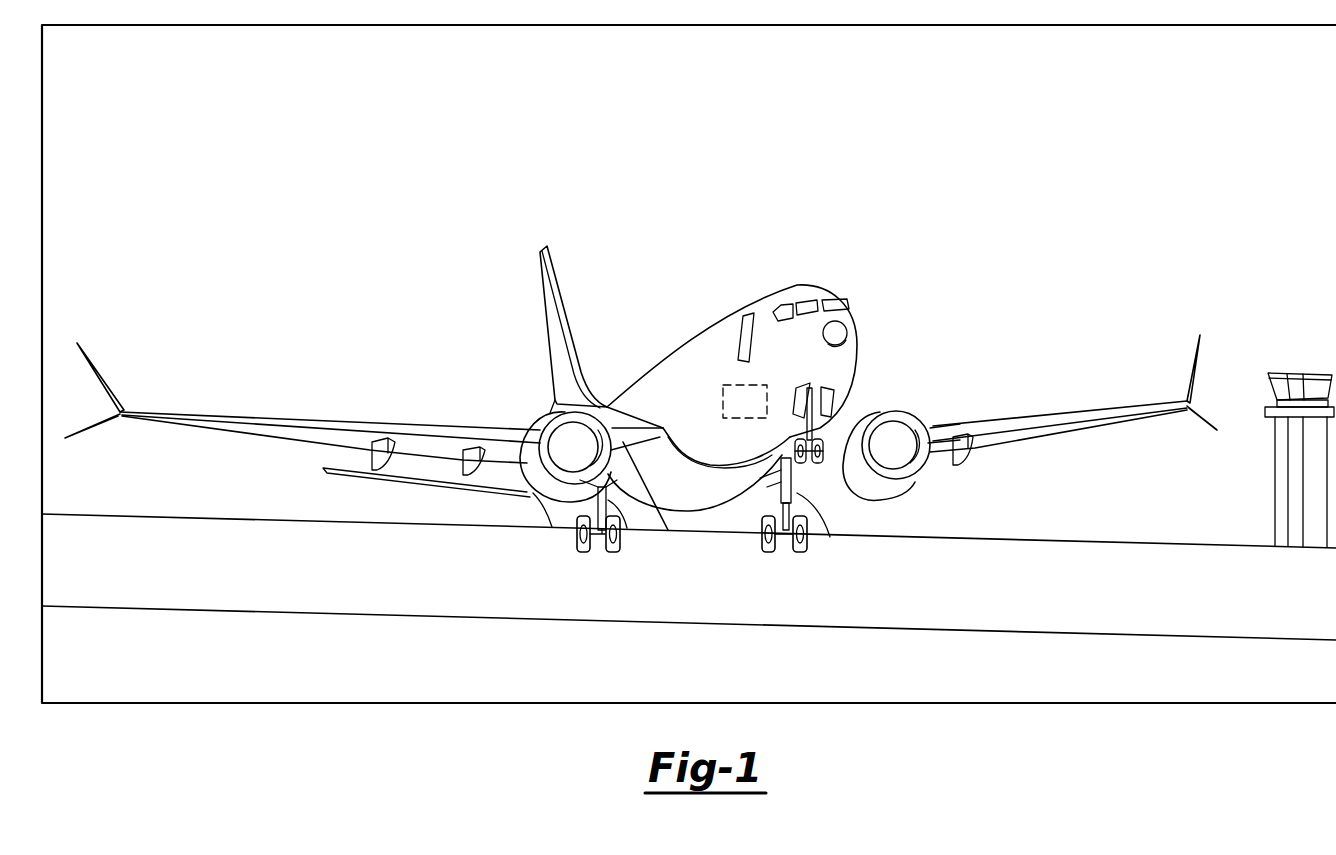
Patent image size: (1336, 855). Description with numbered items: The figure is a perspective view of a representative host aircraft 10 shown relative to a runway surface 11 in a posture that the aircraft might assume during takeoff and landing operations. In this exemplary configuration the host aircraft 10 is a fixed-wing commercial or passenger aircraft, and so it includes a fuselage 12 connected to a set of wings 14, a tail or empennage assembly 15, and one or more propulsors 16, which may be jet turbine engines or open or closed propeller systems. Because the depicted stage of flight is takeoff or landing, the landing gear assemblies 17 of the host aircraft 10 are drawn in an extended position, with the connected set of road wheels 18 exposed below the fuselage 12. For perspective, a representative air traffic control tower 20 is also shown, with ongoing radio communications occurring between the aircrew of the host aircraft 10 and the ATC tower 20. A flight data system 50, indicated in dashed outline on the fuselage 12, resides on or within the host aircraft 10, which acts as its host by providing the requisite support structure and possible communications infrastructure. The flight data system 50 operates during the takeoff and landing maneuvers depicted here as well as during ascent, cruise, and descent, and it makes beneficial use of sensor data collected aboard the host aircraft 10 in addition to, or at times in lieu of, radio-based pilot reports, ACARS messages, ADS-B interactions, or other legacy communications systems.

The host aircraft 10 is at (892, 227).
The runway surface 11 is at (1037, 555).
The fuselage 12 is at (716, 318).
The set of wings 14 is at (292, 416).
The tail or empennage assembly 15 is at (500, 326).
The propulsors 16 is at (523, 493).
The landing gear assemblies 17 is at (838, 420).
The road wheels 18 is at (795, 450).
The air traffic control tower 20 is at (1297, 352).
The flight data system 50 is at (745, 401).